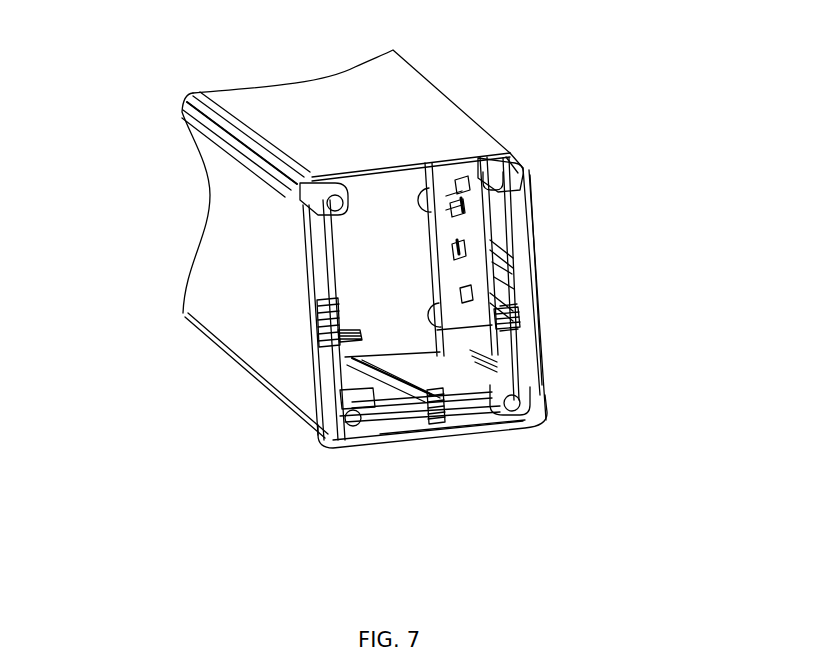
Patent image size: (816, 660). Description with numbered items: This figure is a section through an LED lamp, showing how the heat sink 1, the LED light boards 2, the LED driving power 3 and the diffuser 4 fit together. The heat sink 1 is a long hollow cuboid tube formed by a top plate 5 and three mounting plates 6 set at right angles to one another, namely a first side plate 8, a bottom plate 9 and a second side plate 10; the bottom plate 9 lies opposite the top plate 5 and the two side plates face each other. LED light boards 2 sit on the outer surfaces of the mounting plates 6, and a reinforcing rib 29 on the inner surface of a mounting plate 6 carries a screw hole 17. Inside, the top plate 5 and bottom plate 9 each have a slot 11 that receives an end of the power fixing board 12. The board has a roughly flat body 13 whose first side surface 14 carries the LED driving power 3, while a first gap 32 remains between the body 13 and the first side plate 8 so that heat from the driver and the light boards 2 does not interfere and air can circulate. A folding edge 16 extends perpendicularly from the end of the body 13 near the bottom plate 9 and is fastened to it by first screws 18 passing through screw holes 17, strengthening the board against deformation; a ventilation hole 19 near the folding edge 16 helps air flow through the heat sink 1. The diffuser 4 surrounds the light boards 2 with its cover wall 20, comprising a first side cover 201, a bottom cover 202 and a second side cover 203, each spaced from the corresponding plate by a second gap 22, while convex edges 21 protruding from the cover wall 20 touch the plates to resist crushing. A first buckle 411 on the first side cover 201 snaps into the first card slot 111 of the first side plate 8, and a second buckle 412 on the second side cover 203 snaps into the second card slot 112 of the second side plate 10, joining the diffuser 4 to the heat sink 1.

The heat sink 1 is at (403, 143).
The LED light board 2 is at (513, 290).
The LED driving power 3 is at (388, 231).
The diffuser 4 is at (293, 410).
The top plate 5 is at (455, 142).
The mounting plate 6 is at (507, 228).
The first side plate 8 is at (533, 240).
The bottom plate 9 is at (390, 407).
The second side plate 10 is at (328, 262).
The slot 11 is at (533, 427).
The power fixing board 12 is at (470, 304).
The body 13 is at (525, 328).
The first side surface 14 is at (452, 222).
The folding edge 16 is at (470, 410).
The screw hole 17 is at (446, 412).
The first screw 18 is at (432, 423).
The ventilation hole 19 is at (547, 368).
The cover wall 20 is at (312, 368).
The convex edge 21 is at (547, 403).
The second gap 22 is at (387, 437).
The reinforcing rib 29 is at (300, 455).
The first gap 32 is at (523, 297).
The first card slot 111 is at (493, 177).
The second card slot 112 is at (310, 198).
The first side cover 201 is at (543, 353).
The bottom cover 202 is at (438, 440).
The second side cover 203 is at (312, 290).
The first buckle 411 is at (517, 167).
The second buckle 412 is at (300, 186).